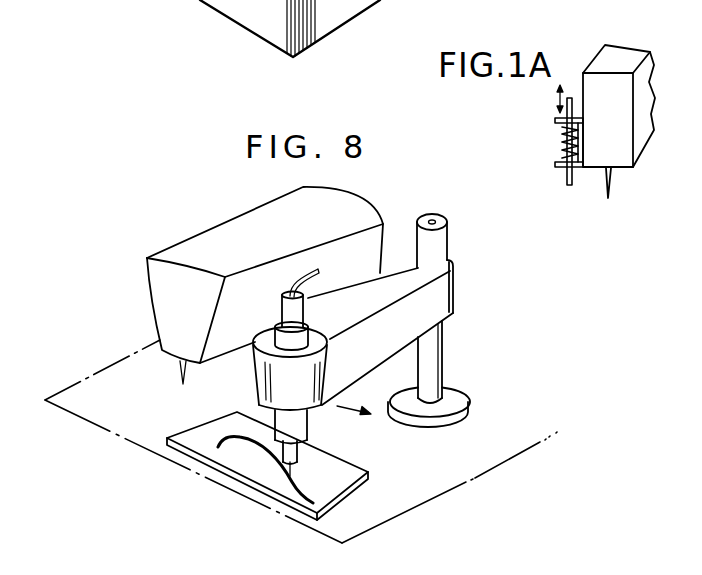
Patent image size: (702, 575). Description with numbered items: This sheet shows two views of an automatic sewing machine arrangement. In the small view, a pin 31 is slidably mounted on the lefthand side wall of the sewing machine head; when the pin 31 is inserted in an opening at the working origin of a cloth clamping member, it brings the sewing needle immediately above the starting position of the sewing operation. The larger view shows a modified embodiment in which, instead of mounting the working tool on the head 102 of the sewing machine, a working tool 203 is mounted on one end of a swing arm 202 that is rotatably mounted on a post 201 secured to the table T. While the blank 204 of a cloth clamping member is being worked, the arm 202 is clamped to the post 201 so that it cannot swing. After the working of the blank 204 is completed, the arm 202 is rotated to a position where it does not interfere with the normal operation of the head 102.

In FIG. 1A, the pin 31 is at (565, 178).
In FIG. 8, the head 102 is at (212, 235).
In FIG. 8, the post 201 is at (445, 358).
In FIG. 8, the swing arm 202 is at (455, 287).
In FIG. 8, the working tool 203 is at (308, 427).
In FIG. 8, the blank 204 is at (197, 444).
In FIG. 8, the table T is at (478, 452).